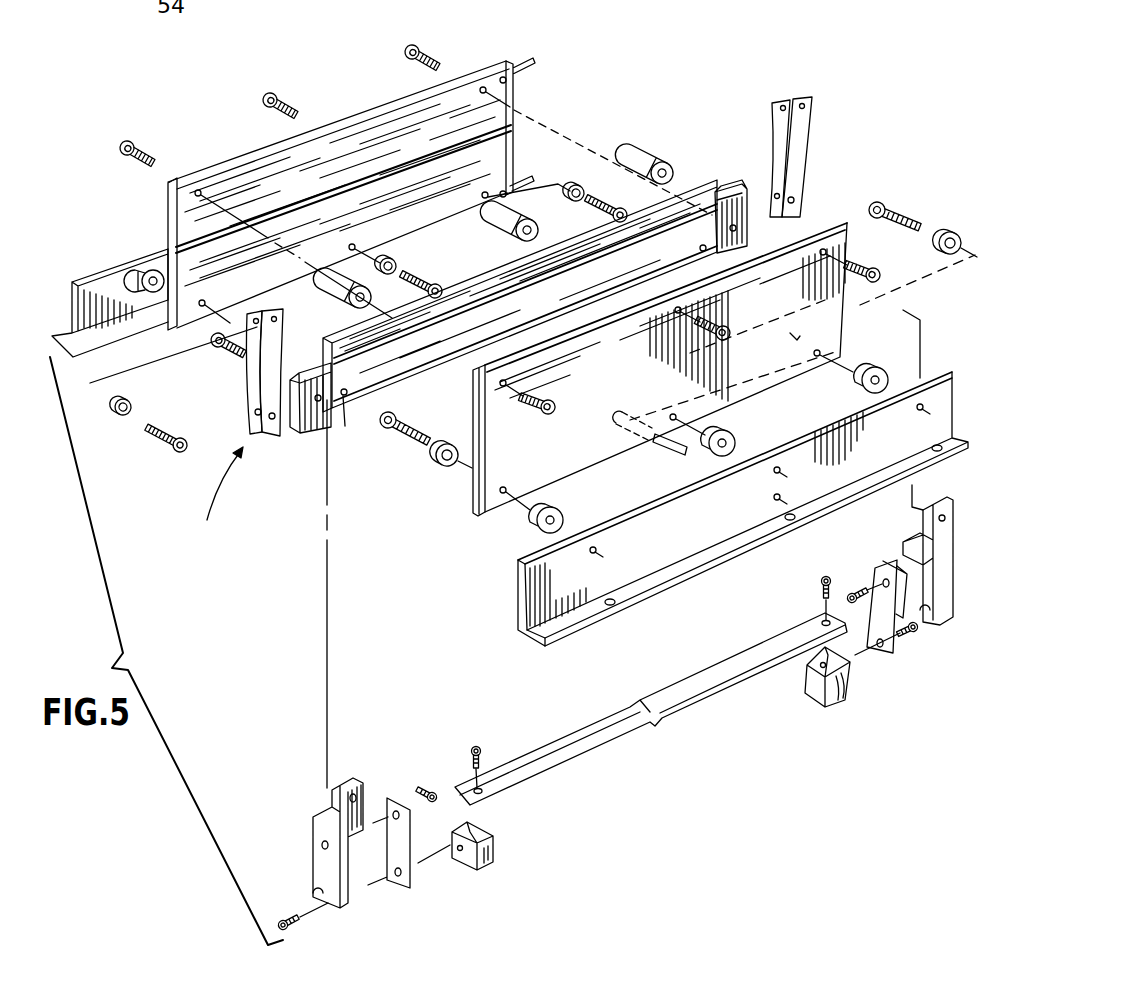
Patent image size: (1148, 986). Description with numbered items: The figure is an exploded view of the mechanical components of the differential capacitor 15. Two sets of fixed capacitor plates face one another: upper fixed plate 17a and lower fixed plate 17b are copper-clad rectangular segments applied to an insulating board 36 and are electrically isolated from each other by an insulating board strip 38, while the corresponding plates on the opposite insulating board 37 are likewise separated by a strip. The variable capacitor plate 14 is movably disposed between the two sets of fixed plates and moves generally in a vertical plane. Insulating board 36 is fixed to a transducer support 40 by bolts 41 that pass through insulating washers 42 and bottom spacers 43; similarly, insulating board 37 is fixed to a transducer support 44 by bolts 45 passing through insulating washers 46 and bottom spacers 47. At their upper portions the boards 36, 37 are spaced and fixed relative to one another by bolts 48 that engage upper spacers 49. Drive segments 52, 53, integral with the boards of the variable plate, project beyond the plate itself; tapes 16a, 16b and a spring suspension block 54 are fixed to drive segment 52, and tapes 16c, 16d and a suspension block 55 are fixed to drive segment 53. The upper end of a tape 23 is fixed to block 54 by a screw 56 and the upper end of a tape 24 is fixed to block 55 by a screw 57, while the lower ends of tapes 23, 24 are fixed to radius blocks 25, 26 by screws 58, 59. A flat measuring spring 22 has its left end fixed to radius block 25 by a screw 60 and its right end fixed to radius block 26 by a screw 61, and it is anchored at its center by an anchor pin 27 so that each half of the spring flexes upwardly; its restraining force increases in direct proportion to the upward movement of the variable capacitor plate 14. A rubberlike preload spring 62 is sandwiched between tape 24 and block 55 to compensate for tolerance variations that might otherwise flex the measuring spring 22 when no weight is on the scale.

The variable capacitor plate 14 is at (500, 288).
The differential capacitor 15 is at (215, 495).
The tape 16a is at (247, 367).
The tape 16b is at (775, 108).
The tape 16c is at (282, 330).
The tape 16d is at (815, 118).
The upper fixed plate 17a is at (185, 211).
The lower fixed plate 17b is at (508, 176).
The flat measuring spring 22 is at (718, 665).
The tape 23 is at (400, 886).
The tape 24 is at (883, 667).
The radius block 25 is at (495, 850).
The radius block 26 is at (838, 712).
The measuring-spring anchor pin 27 is at (672, 449).
The insulating board 36 is at (258, 152).
The insulating board 37 is at (492, 520).
The insulating board strip 38 is at (195, 245).
The transducer support 40 is at (108, 290).
The bolts 41 is at (162, 453).
The insulating washers 42 is at (120, 416).
The bottom spacers 43 is at (150, 293).
The transducer support 44 is at (533, 594).
The bolts 45 is at (385, 432).
The insulating washers 46 is at (435, 462).
The bottom spacers 47 is at (881, 366).
The bolts 48 is at (423, 48).
The upper spacers 49 is at (637, 158).
The drive segment 52 is at (303, 430).
The drive segment 53 is at (745, 200).
The spring suspension block 54 is at (320, 830).
The suspension block 55 is at (950, 522).
The screw 56 is at (426, 792).
The screw 57 is at (849, 593).
The screw 58 is at (300, 931).
The screw 59 is at (916, 640).
The screw 60 is at (482, 757).
The screw 61 is at (818, 588).
The preload spring 62 is at (890, 560).